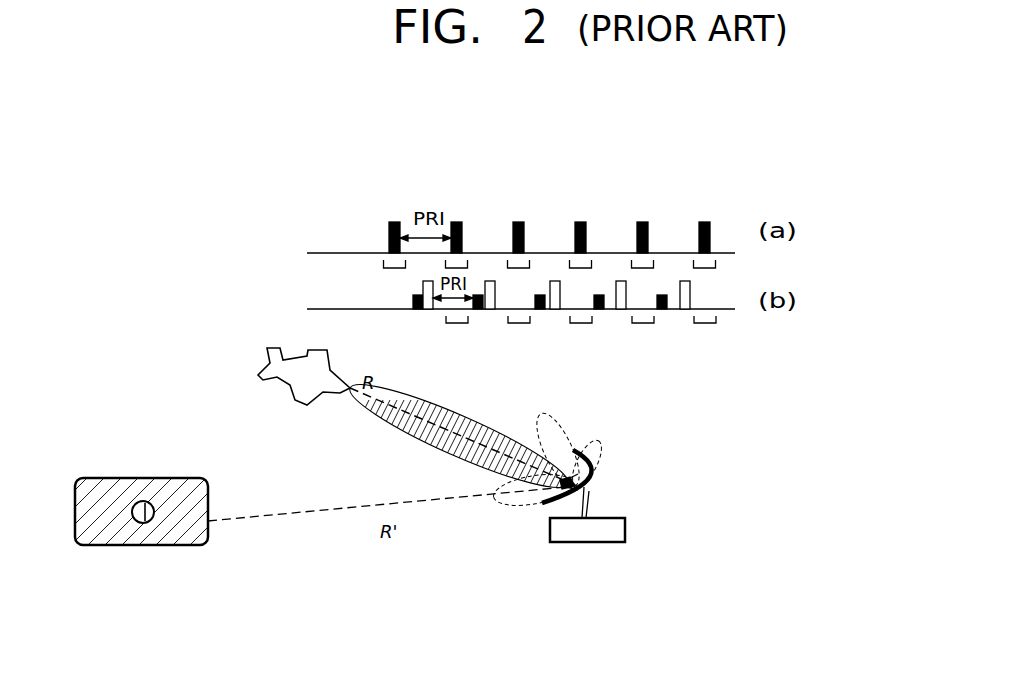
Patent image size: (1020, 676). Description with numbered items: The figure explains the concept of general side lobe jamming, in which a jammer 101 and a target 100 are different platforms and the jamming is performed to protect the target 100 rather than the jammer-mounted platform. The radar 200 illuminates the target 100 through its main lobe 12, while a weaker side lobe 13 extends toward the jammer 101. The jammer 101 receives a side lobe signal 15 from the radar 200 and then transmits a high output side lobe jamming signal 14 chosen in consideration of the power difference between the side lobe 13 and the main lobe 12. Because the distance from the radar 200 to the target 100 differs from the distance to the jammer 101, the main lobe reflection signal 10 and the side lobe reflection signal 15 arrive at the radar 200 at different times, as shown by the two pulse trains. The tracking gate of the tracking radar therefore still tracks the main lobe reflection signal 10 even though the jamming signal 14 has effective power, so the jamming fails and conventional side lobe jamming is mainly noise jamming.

The main lobe reflection signal 10 is at (392, 221).
The side lobe jamming signal 14 is at (428, 310).
The side lobe reflection signal 15 is at (418, 310).
The target 100 is at (273, 347).
The main lobe 12 is at (488, 431).
The side lobe 13 is at (523, 508).
The radar 200 is at (588, 544).
The jammer 101 is at (143, 547).